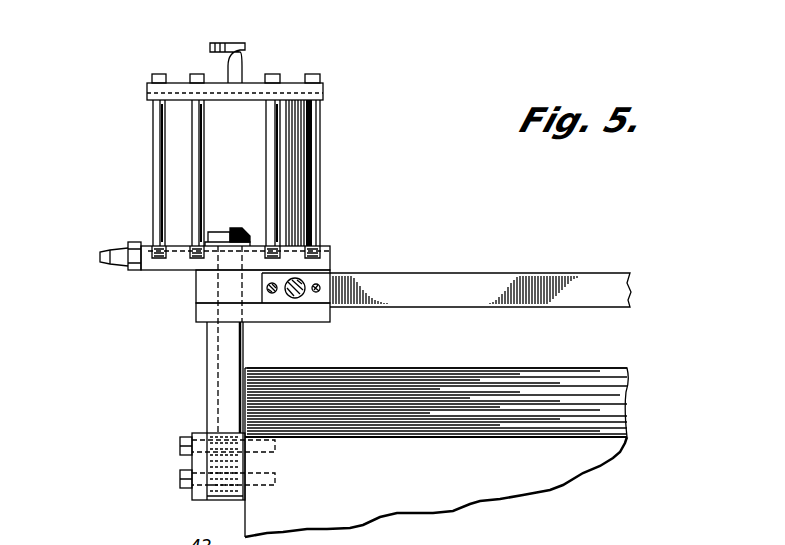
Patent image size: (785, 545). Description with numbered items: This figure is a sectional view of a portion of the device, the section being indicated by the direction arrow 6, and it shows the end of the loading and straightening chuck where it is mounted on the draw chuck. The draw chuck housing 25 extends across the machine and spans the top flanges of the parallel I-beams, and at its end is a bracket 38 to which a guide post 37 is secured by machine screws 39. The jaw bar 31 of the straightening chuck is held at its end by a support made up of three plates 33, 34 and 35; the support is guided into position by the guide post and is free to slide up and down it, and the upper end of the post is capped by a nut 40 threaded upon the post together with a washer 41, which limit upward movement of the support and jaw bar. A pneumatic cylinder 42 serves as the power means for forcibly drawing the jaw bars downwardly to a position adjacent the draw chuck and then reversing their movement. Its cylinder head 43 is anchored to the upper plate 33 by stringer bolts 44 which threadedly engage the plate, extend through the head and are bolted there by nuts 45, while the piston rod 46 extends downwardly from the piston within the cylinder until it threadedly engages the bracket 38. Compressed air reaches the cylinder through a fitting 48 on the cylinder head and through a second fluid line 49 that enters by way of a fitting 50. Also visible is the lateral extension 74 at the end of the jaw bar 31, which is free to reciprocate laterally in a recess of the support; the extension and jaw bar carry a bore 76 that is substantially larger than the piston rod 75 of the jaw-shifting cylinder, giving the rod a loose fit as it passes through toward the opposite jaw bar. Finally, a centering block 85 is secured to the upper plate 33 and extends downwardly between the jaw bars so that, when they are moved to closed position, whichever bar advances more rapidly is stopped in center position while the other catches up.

The section line direction arrow 6 is at (70, 253).
The chuck housing 25 is at (600, 408).
The jaw bar 31 is at (510, 290).
The plate 33 is at (160, 270).
The plate 34 is at (200, 285).
The plate 35 is at (200, 312).
The guide post 37 is at (210, 362).
The bracket 38 is at (192, 498).
The machine screws 39 is at (180, 480).
The nut 40 is at (212, 232).
The washer 41 is at (250, 232).
The pneumatic cylinder 42 is at (294, 150).
The cylinder head 43 is at (322, 90).
The stringer bolts 44 is at (192, 134).
The nuts 45 is at (165, 74).
The piston rod 46 is at (218, 402).
The fitting 48 is at (245, 62).
The fluid line 49 is at (102, 262).
The fitting 50 is at (130, 242).
The lateral extension 74 is at (272, 294).
The piston rod 75 is at (300, 282).
The bore 76 is at (298, 298).
The centering block 85 is at (320, 286).